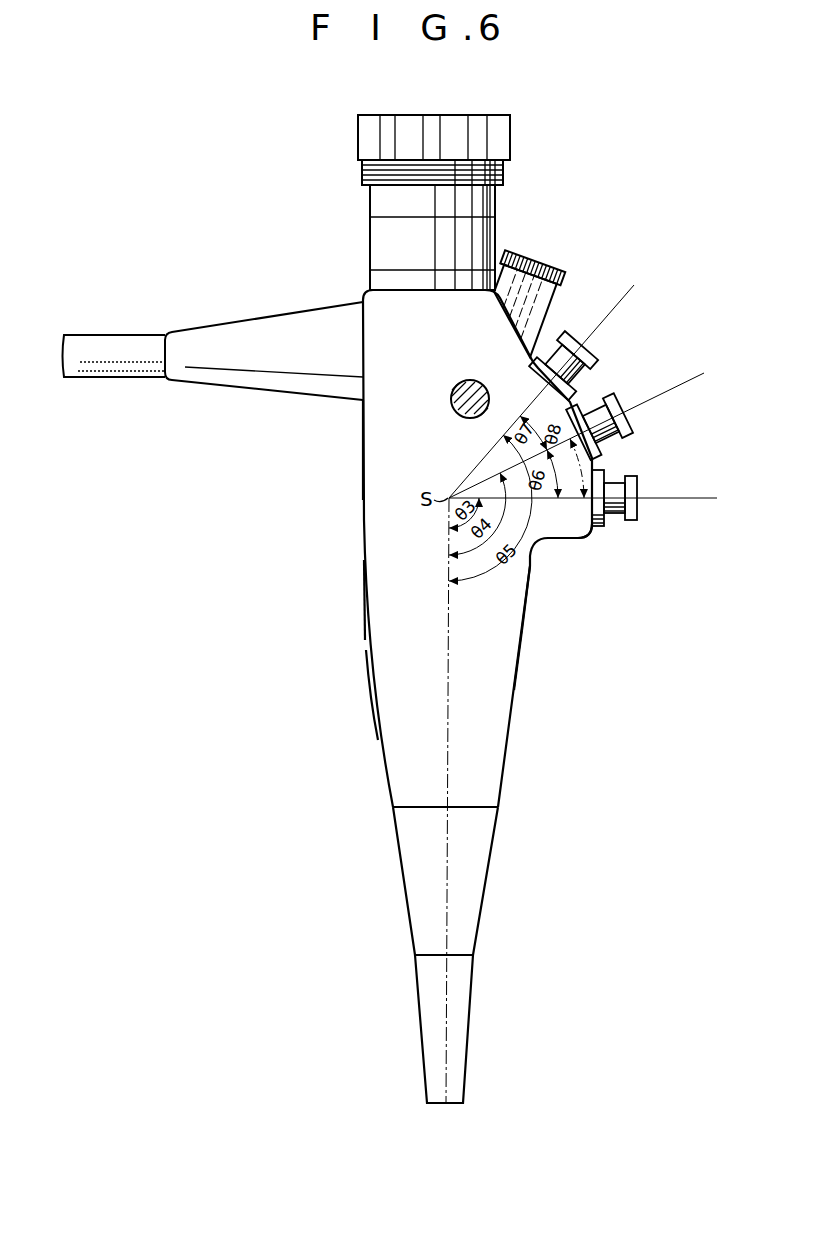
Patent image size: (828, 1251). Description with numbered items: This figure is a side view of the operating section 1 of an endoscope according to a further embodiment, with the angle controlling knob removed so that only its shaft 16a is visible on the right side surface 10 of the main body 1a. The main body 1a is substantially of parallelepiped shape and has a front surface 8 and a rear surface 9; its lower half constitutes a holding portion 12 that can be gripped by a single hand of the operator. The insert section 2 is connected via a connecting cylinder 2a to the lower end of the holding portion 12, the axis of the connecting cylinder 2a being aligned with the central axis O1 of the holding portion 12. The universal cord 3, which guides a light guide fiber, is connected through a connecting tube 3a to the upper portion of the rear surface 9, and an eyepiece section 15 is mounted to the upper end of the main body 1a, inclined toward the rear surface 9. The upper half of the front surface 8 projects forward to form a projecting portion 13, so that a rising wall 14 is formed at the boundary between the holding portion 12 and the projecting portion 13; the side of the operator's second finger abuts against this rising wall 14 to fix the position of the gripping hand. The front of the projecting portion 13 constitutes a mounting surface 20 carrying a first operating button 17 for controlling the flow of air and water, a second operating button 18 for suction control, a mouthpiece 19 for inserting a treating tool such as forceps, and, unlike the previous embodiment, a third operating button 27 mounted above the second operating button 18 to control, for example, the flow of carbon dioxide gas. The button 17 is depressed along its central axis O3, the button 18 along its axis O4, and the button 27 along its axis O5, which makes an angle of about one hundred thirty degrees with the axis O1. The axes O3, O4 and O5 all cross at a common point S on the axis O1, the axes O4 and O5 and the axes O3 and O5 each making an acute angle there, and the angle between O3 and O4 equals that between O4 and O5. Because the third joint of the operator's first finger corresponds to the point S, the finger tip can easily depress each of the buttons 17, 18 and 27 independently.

The operating section 1 is at (365, 547).
The main body 1a is at (367, 613).
The insert section 2 is at (466, 1021).
The connecting cylinder 2a is at (406, 889).
The universal cord 3 is at (118, 336).
The connecting tube 3a is at (229, 375).
The front surface 8 is at (527, 600).
The rear surface 9 is at (361, 456).
The right side surface 10 is at (500, 654).
The holding portion 12 is at (384, 689).
The projecting portion 13 is at (598, 472).
The rising wall 14 is at (552, 540).
The eyepiece section 15 is at (509, 147).
The shaft 16a is at (452, 391).
The first operating button 17 is at (614, 515).
The second operating button 18 is at (627, 435).
The mouthpiece 19 is at (563, 268).
The mounting surface 20 is at (580, 408).
The third operating button 27 is at (588, 380).
The central axis of the holding portion O1 is at (448, 783).
The central axis of the first operating button O3 is at (676, 500).
The central axis of the second operating button O4 is at (692, 382).
The central axis of the third operating button O5 is at (624, 302).